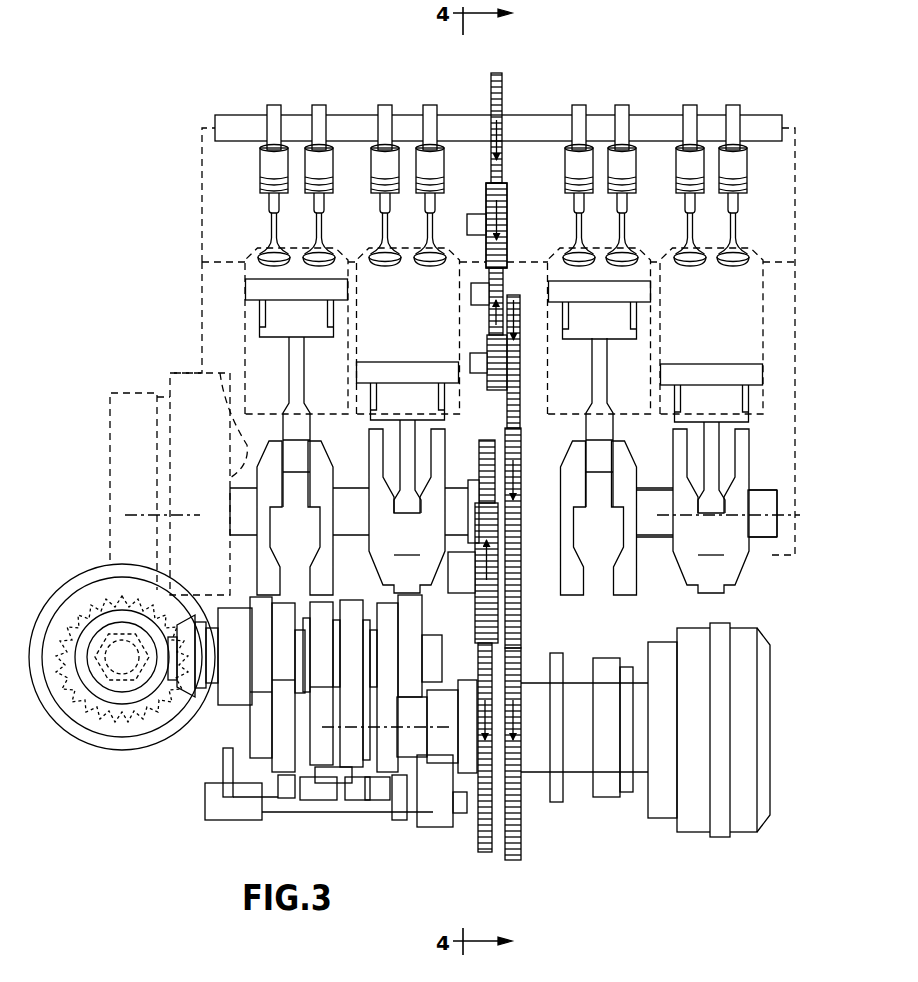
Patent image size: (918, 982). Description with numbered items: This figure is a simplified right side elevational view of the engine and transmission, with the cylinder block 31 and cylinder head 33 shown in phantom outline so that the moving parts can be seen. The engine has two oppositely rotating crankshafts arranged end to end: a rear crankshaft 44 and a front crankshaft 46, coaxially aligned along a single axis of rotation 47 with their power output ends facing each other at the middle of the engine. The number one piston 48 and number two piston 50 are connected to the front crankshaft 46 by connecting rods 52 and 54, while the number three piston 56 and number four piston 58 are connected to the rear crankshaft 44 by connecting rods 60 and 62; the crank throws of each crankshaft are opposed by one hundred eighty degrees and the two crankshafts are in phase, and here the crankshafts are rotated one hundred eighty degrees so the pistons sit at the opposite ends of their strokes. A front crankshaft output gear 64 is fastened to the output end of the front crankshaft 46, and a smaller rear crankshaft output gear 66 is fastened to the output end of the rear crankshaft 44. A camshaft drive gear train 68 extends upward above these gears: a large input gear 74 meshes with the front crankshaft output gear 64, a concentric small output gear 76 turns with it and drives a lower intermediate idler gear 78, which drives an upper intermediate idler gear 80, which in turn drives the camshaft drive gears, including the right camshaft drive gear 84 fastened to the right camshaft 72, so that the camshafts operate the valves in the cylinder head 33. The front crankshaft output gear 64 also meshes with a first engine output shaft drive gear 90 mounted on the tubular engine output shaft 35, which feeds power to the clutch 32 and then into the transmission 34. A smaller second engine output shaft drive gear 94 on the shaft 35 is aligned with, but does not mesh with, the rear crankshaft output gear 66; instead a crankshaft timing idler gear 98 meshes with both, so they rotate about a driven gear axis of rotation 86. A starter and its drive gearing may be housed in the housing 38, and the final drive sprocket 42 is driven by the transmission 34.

The cylinder block 31 is at (202, 287).
The clutch 32 is at (693, 833).
The cylinder head 33 is at (202, 152).
The transmission 34 is at (185, 811).
The engine output shaft 35 is at (534, 768).
The housing 38 is at (123, 393).
The final drive sprocket 42 is at (98, 707).
The rear crankshaft 44 is at (356, 525).
The front crankshaft 46 is at (657, 530).
The axis of rotation 47 is at (770, 476).
The number one piston 48 is at (725, 368).
The number two piston 50 is at (643, 291).
The connecting rod 52 is at (705, 444).
The connecting rod 54 is at (600, 386).
The number three piston 56 is at (388, 365).
The number four piston 58 is at (262, 283).
The connecting rod 60 is at (403, 442).
The connecting rod 62 is at (297, 380).
The front crankshaft output gear 64 is at (522, 450).
The rear crankshaft output gear 66 is at (479, 445).
The camshaft drive gear train 68 is at (478, 195).
The right camshaft 72 is at (543, 122).
The large input gear 74 is at (520, 366).
The small output gear 76 is at (487, 352).
The lower intermediate idler gear 78 is at (504, 270).
The upper intermediate idler gear 80 is at (507, 213).
The right camshaft drive gear 84 is at (491, 83).
The driven gear axis of rotation 86 is at (370, 722).
The first engine output shaft drive gear 90 is at (510, 860).
The second engine output shaft drive gear 94 is at (480, 852).
The crankshaft timing idler gear 98 is at (475, 627).